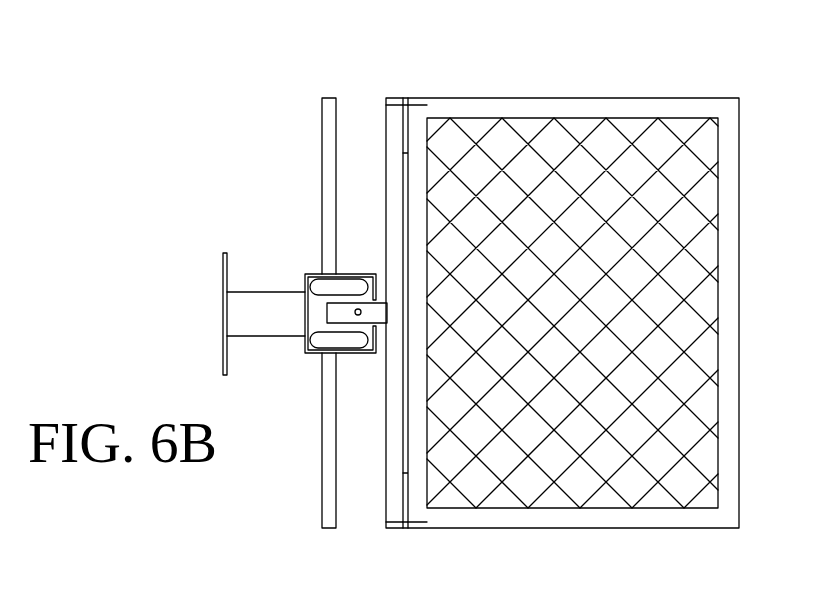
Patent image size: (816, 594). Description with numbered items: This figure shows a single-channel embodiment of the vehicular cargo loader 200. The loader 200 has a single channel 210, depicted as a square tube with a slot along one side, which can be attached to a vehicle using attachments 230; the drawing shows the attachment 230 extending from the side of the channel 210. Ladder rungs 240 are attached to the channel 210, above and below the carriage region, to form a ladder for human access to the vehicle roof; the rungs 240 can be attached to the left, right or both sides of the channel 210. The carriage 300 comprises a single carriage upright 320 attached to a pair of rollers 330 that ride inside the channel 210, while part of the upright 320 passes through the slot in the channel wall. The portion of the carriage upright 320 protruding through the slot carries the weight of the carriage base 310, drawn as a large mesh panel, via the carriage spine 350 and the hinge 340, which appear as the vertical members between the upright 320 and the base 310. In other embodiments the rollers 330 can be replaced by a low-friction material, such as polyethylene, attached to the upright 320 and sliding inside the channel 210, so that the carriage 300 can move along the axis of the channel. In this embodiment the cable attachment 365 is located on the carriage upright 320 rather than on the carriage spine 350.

The loader 200 is at (206, 86).
The channel 210 is at (306, 272).
The attachments 230 is at (223, 303).
The ladder rungs 240 is at (329, 145).
The carriage 300 is at (668, 64).
The carriage base 310 is at (582, 108).
The carriage upright 320 is at (333, 315).
The rollers 330 is at (342, 288).
The hinge 340 is at (418, 98).
The carriage spine 350 is at (395, 98).
The cable attachment 365 is at (358, 309).